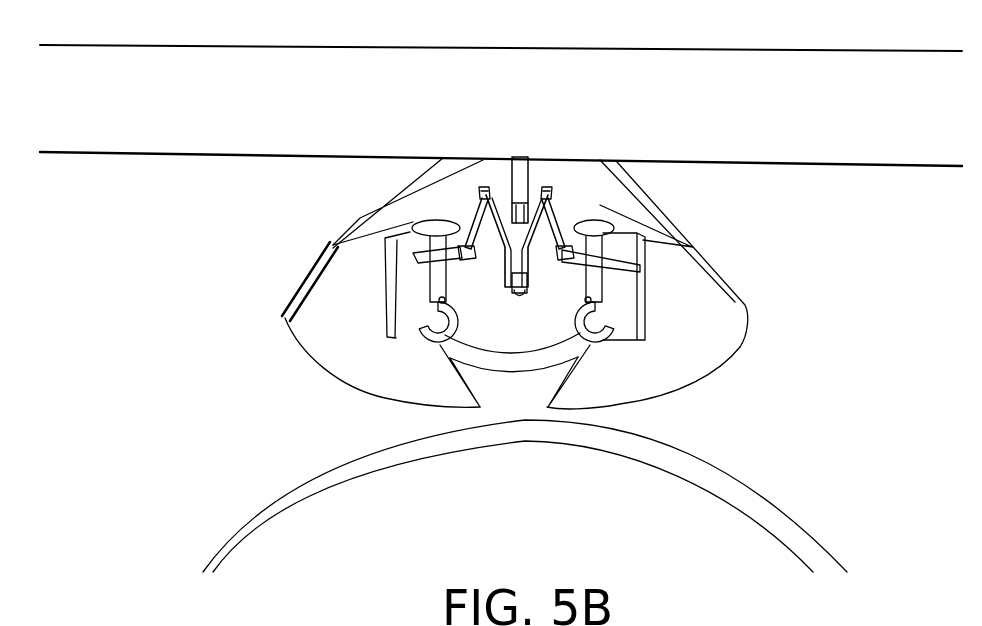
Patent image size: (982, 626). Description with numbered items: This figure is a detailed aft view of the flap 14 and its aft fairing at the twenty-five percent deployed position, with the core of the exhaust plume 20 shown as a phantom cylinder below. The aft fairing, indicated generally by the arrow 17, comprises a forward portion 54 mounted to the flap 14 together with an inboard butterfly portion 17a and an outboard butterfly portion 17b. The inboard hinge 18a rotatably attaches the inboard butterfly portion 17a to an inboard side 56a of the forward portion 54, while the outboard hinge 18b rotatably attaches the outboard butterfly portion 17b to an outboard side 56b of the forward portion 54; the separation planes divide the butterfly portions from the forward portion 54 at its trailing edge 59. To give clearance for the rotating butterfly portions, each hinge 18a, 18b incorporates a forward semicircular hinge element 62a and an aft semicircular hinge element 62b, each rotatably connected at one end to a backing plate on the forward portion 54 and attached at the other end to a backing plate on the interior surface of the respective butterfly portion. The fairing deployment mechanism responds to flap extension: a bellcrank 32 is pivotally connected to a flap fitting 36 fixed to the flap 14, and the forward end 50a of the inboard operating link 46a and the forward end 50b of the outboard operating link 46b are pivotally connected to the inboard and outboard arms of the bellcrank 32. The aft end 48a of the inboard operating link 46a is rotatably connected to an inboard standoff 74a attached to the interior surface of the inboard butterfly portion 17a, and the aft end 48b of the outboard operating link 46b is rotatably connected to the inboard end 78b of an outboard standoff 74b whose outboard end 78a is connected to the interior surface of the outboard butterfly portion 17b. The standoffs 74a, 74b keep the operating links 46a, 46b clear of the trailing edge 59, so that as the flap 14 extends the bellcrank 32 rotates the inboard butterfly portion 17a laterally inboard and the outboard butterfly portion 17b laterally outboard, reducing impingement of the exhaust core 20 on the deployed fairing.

The flap 14 is at (678, 80).
The core of the exhaust plume 20 is at (760, 507).
The vane assembly 17 is at (302, 210).
The inboard butterfly portion 17a is at (727, 360).
The outboard butterfly portion 17b is at (318, 374).
The flap fitting 36 is at (522, 178).
The forward end of the inboard operating link 50a is at (548, 190).
The forward end of the outboard operating link 50b is at (481, 192).
The inboard operating link 46a is at (561, 230).
The outboard operating link 46b is at (468, 232).
The aft end of the inboard operating link 48a is at (565, 242).
The aft end of the outboard operating link 48b is at (466, 242).
The inboard hinge 18a is at (594, 300).
The outboard hinge 18b is at (420, 325).
The forward semicircular hinge element 62a is at (440, 346).
The aft semicircular hinge element 62b is at (455, 222).
The inboard standoff 74a is at (597, 263).
The outboard standoff 74b is at (437, 272).
The outboard end of the outboard standoff 78a is at (460, 253).
The inboard end of the outboard standoff 78b is at (432, 300).
The bellcrank 32 is at (520, 262).
The inboard side of the forward portion 56a is at (575, 290).
The outboard side of the forward portion 56b is at (448, 283).
The forward portion 54 is at (530, 360).
The trailing edge of the forward portion 59 is at (522, 365).